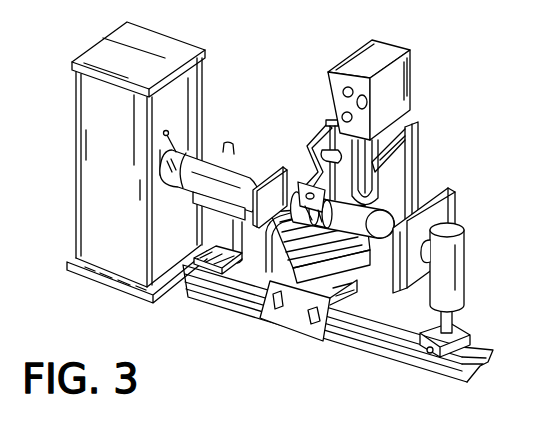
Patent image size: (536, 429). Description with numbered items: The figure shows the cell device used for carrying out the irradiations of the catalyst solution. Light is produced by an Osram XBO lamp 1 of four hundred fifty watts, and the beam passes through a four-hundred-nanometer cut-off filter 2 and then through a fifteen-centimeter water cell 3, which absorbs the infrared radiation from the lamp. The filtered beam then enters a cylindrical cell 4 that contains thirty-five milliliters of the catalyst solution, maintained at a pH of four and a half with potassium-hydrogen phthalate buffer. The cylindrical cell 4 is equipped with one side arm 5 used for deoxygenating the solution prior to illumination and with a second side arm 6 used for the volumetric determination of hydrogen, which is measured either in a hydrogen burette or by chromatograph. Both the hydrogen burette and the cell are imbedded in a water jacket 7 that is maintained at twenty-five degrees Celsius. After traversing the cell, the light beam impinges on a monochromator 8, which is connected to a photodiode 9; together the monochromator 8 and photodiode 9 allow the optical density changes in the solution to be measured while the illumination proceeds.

The lamp 1 is at (92, 155).
The cut-off filter 2 is at (275, 182).
The water cell 3 is at (234, 166).
The cylindrical cell 4 is at (345, 222).
The side arm 5 is at (298, 178).
The second side arm 6 is at (330, 120).
The water jacket 7 is at (387, 57).
The monochromator 8 is at (457, 207).
The photodiode 9 is at (450, 282).